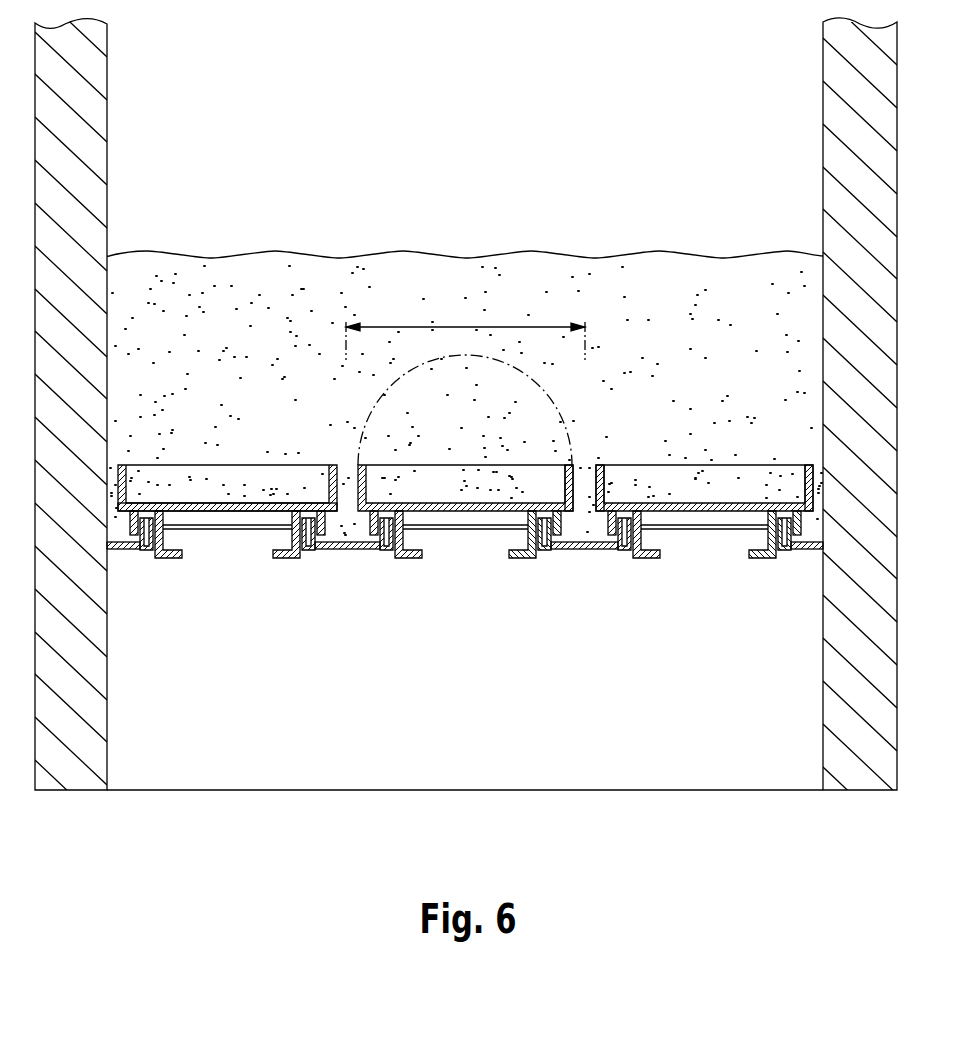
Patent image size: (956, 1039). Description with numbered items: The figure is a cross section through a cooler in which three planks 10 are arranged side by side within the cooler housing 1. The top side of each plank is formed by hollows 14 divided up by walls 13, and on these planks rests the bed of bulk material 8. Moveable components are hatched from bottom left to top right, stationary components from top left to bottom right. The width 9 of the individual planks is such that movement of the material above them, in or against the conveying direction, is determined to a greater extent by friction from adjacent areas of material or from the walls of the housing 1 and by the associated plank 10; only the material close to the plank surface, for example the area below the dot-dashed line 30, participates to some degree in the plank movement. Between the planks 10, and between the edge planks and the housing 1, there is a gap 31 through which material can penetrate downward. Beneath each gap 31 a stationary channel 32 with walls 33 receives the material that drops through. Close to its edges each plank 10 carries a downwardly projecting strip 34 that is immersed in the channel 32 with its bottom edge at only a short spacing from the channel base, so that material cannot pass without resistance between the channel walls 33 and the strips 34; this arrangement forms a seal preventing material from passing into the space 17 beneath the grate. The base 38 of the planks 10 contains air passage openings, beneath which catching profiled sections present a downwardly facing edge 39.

The cooler housing 1 is at (70, 84).
The bed of bulk material 8 is at (364, 270).
The width of the individual planks 9 is at (465, 327).
The dot-dashed line 30 is at (505, 363).
The plank 10 is at (235, 484).
The wall 13 is at (227, 440).
The hollow 14 is at (167, 485).
The base of the planks 38 is at (217, 512).
The downwardly facing edge 39 is at (252, 530).
The channel wall 33 is at (306, 512).
The downwardly projecting strip 34 is at (320, 523).
The channel 32 is at (368, 541).
The gap 31 is at (587, 483).
The space beneath the grate 17 is at (494, 688).